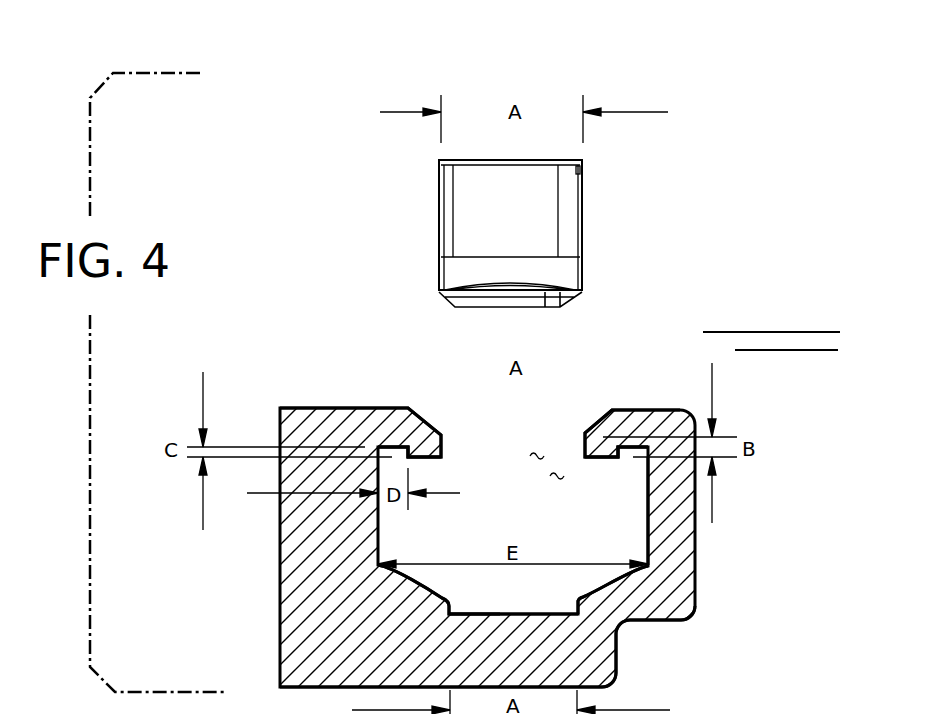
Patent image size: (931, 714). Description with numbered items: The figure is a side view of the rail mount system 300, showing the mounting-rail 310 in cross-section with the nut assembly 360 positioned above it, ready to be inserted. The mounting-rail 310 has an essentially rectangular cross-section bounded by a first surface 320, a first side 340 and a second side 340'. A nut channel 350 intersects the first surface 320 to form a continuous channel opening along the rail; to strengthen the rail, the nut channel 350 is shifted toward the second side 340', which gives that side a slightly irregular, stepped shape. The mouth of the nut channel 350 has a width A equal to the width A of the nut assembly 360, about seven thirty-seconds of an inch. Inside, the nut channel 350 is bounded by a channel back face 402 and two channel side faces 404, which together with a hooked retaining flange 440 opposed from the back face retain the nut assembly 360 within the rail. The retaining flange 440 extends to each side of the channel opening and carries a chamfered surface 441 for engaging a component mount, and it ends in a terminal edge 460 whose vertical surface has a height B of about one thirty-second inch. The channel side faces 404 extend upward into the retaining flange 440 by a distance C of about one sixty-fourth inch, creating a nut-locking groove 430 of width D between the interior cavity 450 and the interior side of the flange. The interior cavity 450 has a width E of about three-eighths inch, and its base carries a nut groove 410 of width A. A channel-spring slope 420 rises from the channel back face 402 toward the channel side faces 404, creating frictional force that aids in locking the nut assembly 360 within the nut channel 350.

The rail mount system 300 is at (205, 47).
The nut assembly 360 is at (280, 126).
The mounting-rail 310 is at (293, 326).
The first surface 320 is at (288, 408).
The retaining flange 440 is at (443, 427).
The chamfered surface 441 is at (585, 423).
The nut channel 350 is at (537, 453).
The interior cavity 450 is at (557, 473).
The terminal edge 460 is at (441, 450).
The nut-locking groove 430 is at (628, 457).
The channel side faces 404 is at (648, 522).
The channel back face 402 is at (479, 613).
The nut groove 410 is at (526, 613).
The channel-spring slope 420 is at (592, 592).
The first side 340 is at (404, 670).
The second side 340' is at (687, 638).